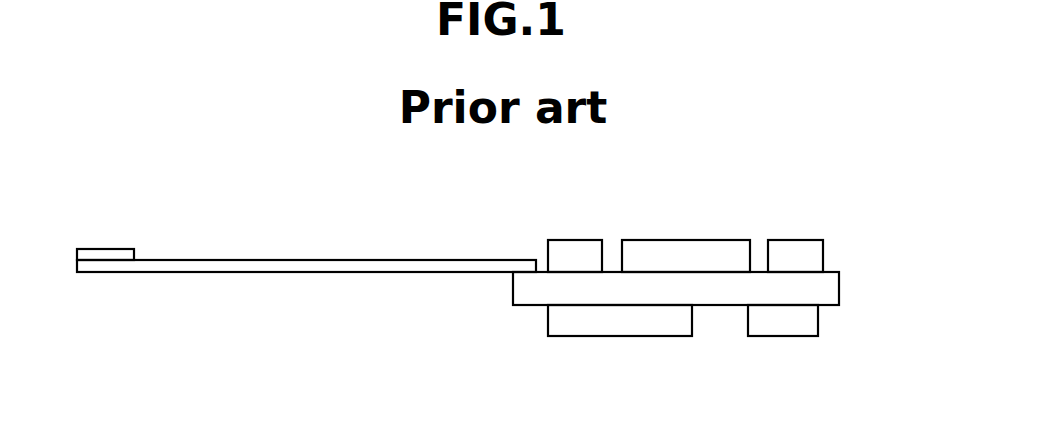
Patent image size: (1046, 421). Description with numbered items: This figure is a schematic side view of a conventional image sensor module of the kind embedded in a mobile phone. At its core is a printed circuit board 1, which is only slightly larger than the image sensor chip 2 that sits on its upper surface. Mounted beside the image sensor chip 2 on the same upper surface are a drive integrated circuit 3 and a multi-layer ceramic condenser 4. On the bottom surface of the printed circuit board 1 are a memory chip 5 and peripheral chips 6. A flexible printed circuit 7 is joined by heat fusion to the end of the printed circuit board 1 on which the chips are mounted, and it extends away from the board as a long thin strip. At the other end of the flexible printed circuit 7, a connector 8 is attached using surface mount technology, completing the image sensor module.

The printed circuit board 1 is at (828, 289).
The image sensor chip 2 is at (691, 240).
The drive integrated circuit 3 is at (577, 240).
The multi-layer ceramic condenser 4 is at (801, 240).
The memory chip 5 is at (618, 337).
The peripheral chips 6 is at (780, 337).
The flexible printed circuit 7 is at (230, 260).
The connector 8 is at (112, 249).